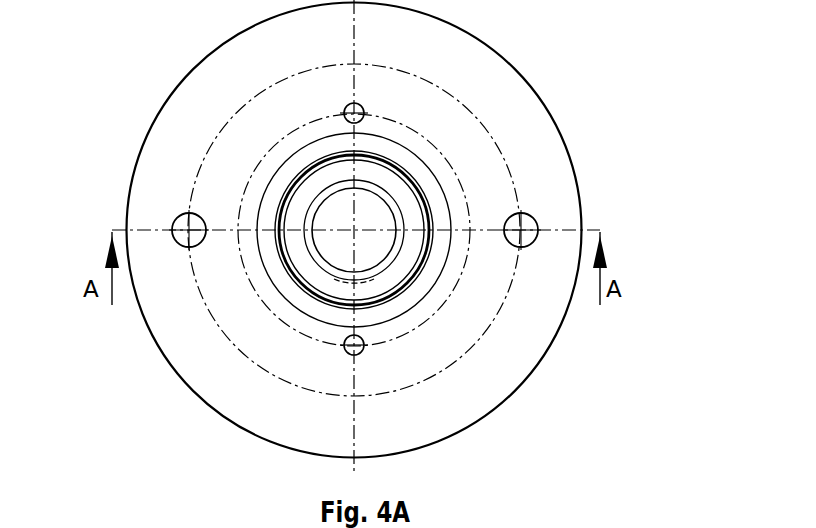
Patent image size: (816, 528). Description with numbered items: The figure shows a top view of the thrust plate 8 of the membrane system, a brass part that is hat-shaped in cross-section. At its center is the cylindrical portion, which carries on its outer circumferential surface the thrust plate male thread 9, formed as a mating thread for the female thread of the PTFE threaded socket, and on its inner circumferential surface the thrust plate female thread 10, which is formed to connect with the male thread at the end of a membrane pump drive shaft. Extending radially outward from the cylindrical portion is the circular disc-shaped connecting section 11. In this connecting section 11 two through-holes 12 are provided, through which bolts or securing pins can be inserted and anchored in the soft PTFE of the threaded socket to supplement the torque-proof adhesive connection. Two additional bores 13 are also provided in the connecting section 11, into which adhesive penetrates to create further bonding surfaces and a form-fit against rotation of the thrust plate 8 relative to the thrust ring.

The thrust plate 8 is at (606, 129).
The thrust plate male thread 9 is at (278, 181).
The thrust plate female thread 10 is at (366, 208).
The connecting section 11 is at (228, 387).
The through-holes 12 is at (344, 109).
The additional bores 13 is at (172, 229).